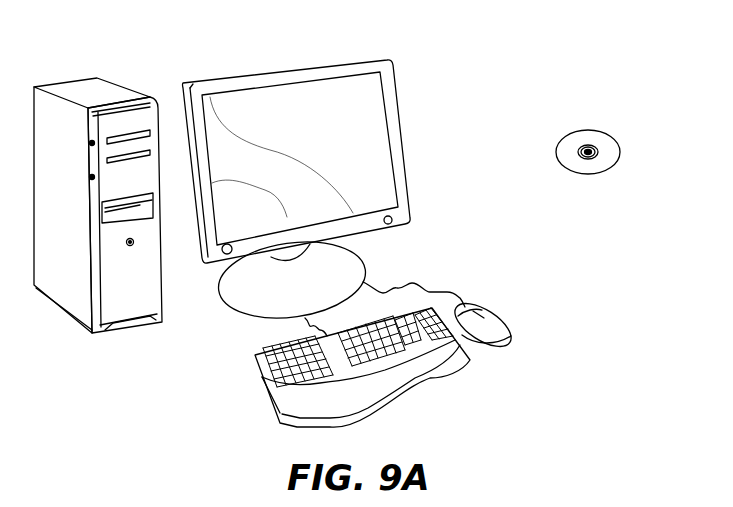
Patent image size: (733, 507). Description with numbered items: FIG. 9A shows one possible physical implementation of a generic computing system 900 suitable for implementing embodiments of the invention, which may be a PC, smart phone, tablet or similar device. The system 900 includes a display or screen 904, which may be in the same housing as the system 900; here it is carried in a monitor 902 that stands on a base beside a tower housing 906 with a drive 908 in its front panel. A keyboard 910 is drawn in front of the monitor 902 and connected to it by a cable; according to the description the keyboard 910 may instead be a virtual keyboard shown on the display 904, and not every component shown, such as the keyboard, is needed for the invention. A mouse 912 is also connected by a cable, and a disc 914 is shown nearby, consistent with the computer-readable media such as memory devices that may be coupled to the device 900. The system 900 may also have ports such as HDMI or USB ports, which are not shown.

The computing system 900 is at (518, 42).
The monitor 902 is at (403, 158).
The display or screen 904 is at (360, 98).
The computer tower 906 is at (83, 90).
The disk drive 908 is at (140, 203).
The keyboard 910 is at (267, 395).
The mouse 912 is at (502, 322).
The removable storage disc 914 is at (604, 130).